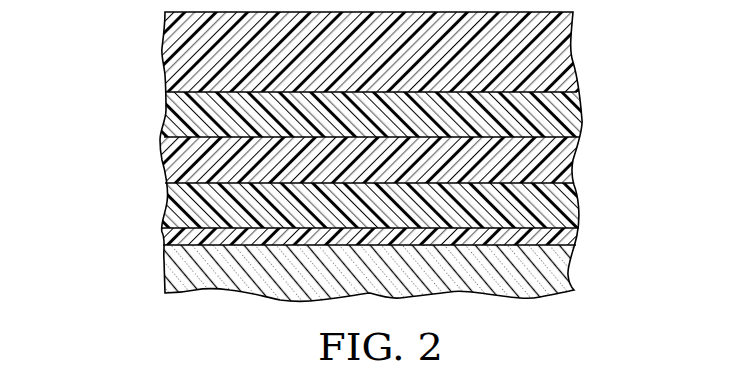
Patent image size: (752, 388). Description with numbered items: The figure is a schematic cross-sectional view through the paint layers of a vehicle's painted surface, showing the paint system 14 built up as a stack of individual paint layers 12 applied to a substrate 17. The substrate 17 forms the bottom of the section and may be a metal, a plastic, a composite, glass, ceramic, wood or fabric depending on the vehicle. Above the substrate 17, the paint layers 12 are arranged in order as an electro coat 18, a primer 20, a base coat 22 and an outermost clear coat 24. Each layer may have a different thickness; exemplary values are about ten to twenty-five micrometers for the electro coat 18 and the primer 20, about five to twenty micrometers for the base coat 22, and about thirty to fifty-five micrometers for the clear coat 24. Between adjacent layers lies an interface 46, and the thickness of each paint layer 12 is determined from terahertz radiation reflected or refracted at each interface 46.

The paint layers 12 is at (165, 63).
The paint system 14 is at (85, 8).
The substrate 17 is at (288, 265).
The electro coat 18 is at (577, 208).
The primer 20 is at (572, 162).
The base coat 22 is at (582, 122).
The clear coat 24 is at (572, 63).
The interface 46 is at (572, 92).